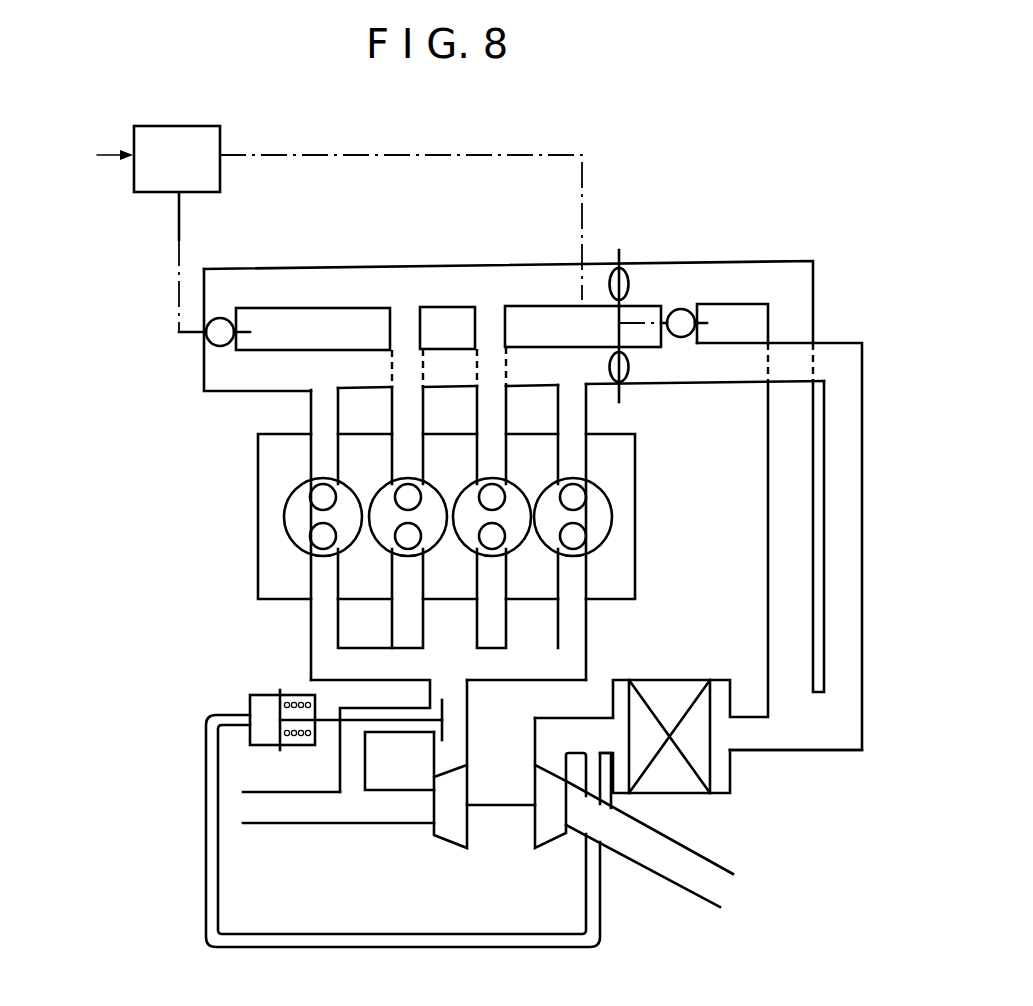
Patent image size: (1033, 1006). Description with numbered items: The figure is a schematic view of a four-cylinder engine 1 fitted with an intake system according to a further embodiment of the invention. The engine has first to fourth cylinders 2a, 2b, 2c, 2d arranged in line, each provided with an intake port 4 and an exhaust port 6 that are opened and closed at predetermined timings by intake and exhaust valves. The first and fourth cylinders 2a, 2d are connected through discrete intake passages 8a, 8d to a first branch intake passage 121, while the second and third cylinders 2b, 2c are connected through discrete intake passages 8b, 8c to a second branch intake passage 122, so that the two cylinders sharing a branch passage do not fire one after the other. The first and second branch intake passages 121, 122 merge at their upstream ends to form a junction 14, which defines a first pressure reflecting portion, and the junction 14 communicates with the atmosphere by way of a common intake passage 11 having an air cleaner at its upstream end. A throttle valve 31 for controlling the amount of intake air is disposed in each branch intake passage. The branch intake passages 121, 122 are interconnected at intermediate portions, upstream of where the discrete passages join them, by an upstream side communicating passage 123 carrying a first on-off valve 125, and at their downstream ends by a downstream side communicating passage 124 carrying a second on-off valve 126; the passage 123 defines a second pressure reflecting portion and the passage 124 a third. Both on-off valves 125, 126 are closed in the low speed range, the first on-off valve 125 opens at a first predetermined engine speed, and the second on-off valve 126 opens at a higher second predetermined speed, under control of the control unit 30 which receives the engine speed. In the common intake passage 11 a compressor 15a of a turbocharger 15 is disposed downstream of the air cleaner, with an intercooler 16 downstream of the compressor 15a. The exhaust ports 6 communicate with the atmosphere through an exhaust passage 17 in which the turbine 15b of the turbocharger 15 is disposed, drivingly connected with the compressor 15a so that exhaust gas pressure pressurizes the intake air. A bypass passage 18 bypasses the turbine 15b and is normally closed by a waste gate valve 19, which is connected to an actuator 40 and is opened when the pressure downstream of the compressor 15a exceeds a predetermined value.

The four-cylinder engine 1 is at (246, 543).
The first cylinder 2a is at (290, 512).
The second cylinder 2b is at (375, 542).
The third cylinder 2c is at (525, 545).
The fourth cylinder 2d is at (618, 502).
The intake port 4 is at (395, 497).
The exhaust port 6 is at (322, 540).
The discrete intake passage 8a is at (310, 400).
The discrete intake passage 8b is at (390, 334).
The discrete intake passage 8c is at (505, 330).
The discrete intake passage 8d is at (590, 405).
The common intake passage 11 is at (675, 884).
The junction 14 is at (795, 740).
The turbocharger 15 is at (475, 801).
The compressor 15a is at (547, 830).
The turbine 15b is at (460, 828).
The intercooler 16 is at (686, 692).
The exhaust passage 17 is at (338, 820).
The bypass passage 18 is at (340, 740).
The waste gate valve 19 is at (445, 712).
The control unit 30 is at (200, 125).
The throttle valve 31 is at (610, 362).
The actuator 40 is at (238, 686).
The first branch intake passage 121 is at (864, 522).
The second branch intake passage 122 is at (462, 266).
The upstream side communicating passage 123 is at (700, 304).
The downstream side communicating passage 124 is at (222, 358).
The first on-off valve 125 is at (681, 308).
The second on-off valve 126 is at (225, 318).